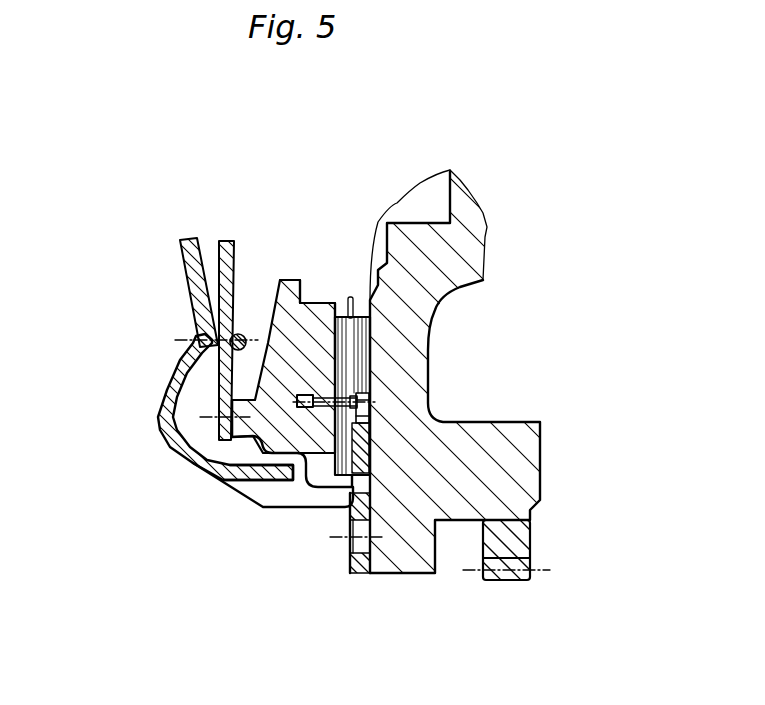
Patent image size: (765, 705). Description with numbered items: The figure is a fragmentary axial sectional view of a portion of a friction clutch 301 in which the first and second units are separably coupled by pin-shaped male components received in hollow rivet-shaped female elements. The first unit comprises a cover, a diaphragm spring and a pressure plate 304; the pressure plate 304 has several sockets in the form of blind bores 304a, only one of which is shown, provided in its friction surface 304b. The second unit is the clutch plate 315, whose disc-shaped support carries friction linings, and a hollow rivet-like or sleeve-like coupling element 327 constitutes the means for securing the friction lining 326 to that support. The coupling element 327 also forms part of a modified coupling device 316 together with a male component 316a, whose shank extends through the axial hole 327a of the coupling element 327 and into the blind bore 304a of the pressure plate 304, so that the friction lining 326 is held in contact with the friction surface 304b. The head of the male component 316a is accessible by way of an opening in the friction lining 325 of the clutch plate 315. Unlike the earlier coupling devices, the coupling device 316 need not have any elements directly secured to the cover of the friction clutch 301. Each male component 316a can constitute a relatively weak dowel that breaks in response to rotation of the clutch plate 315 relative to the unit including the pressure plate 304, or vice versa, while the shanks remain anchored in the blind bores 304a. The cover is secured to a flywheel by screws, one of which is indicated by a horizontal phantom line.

The friction clutch 301 is at (143, 497).
The pressure plate 304 is at (303, 443).
The blind bore 304a is at (270, 460).
The friction surface 304b is at (335, 360).
The clutch plate 315 is at (363, 337).
The coupling device 316 is at (302, 447).
The male component 316a is at (365, 394).
The friction lining 325 is at (362, 464).
The friction lining 326 is at (363, 573).
The coupling element 327 is at (358, 418).
The axial hole 327a is at (363, 405).